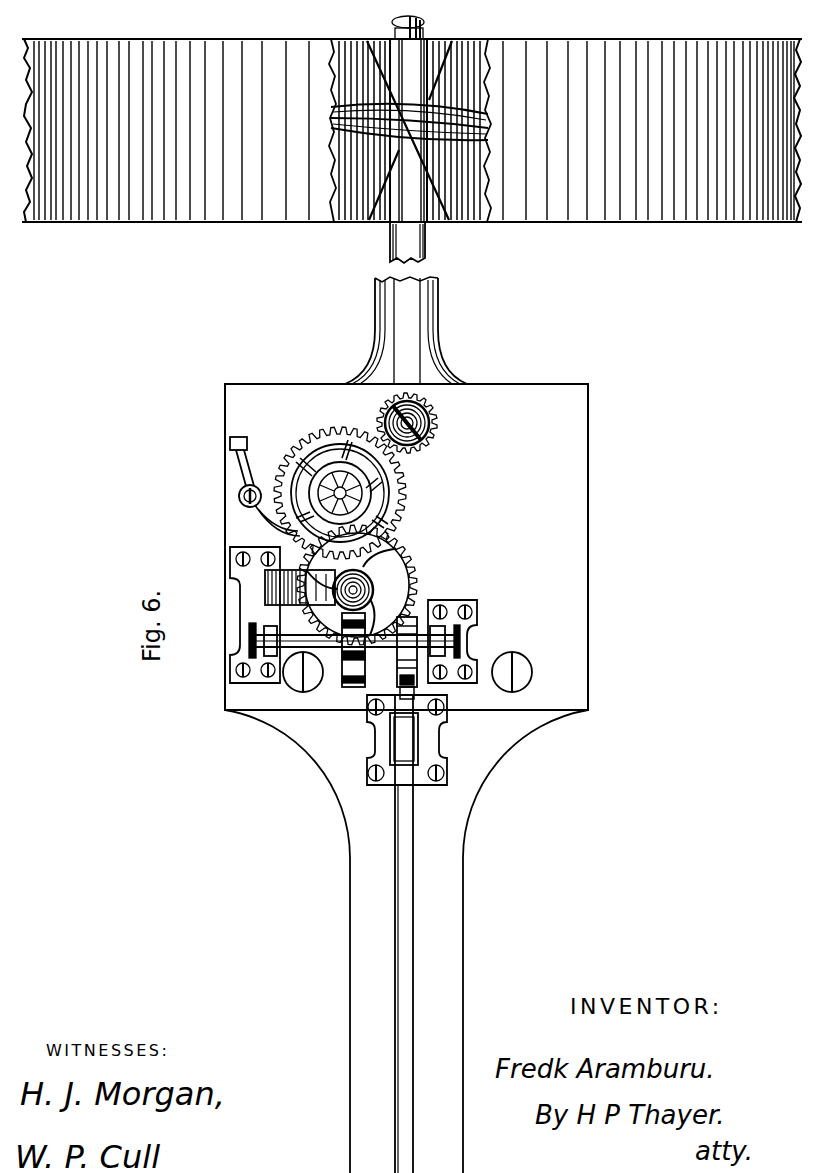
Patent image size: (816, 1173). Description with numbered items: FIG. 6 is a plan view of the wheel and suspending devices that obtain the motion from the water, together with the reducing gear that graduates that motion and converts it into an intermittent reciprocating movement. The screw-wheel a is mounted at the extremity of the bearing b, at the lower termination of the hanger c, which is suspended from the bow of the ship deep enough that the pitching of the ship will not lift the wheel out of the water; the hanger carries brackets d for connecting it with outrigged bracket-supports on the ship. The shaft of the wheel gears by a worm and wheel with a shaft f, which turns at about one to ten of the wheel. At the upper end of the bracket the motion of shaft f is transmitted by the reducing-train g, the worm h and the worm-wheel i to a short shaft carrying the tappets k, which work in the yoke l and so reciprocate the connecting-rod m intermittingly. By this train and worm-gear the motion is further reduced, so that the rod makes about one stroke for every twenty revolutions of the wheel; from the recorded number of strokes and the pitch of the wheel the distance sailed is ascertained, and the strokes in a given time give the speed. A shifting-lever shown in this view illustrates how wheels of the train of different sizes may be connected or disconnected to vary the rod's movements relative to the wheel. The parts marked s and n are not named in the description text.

The screw-wheel a is at (256, 212).
The bearing b is at (388, 241).
The hanger c is at (380, 427).
The brackets d is at (393, 504).
The shaft f is at (270, 517).
The reducing-train g is at (397, 521).
The worm h is at (336, 592).
The worm-wheel i is at (356, 690).
The tappets k is at (412, 681).
The yoke l is at (368, 667).
The guide bracket s is at (394, 748).
The connecting-rod m is at (395, 815).
The frame n is at (462, 872).